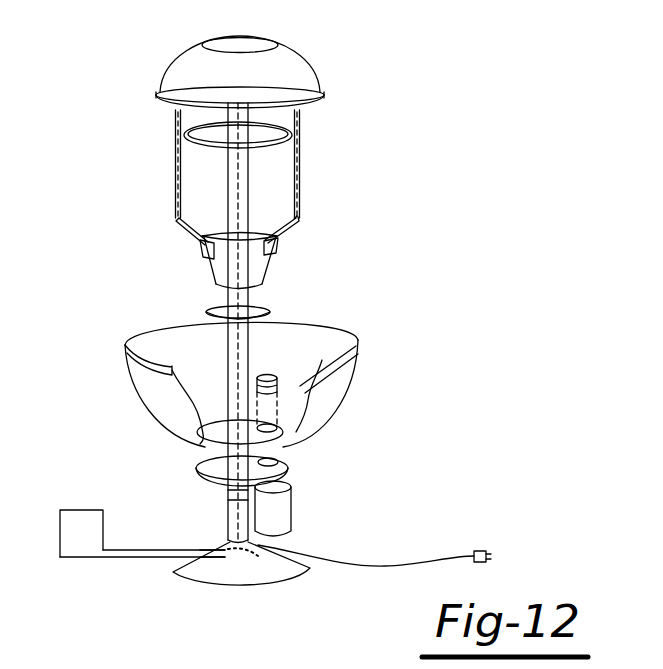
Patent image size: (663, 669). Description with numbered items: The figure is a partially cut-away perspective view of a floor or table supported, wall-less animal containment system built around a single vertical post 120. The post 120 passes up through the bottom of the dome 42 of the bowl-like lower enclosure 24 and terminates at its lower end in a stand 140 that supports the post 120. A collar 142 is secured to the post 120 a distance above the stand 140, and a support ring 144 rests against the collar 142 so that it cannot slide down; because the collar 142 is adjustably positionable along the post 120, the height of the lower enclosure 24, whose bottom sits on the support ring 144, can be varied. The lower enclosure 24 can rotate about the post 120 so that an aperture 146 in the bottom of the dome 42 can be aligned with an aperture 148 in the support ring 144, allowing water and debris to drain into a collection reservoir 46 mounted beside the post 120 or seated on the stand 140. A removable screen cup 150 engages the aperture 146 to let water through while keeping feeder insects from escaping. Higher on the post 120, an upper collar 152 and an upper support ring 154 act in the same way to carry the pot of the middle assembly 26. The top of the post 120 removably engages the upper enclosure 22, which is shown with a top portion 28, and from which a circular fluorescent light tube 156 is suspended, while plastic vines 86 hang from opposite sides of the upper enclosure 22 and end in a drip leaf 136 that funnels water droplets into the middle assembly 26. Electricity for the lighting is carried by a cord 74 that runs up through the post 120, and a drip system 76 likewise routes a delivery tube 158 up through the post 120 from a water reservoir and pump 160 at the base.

The upper enclosure 22 is at (196, 77).
The lower enclosure 24 is at (135, 421).
The middle assembly 26 is at (196, 289).
The top cap of dome 28 is at (200, 62).
The dome 42 is at (276, 250).
The collection reservoir 46 is at (293, 507).
The cord 74 is at (416, 566).
The drip system 76 is at (148, 571).
The plastic vines 86 is at (178, 175).
The post 120 is at (238, 182).
The drip leaf 136 is at (200, 243).
The stand 140 is at (290, 577).
The collar 142 is at (230, 498).
The support ring 144 is at (198, 473).
The aperture 146 is at (333, 407).
The aperture 148 is at (290, 465).
The screen cup 150 is at (354, 347).
The upper collar 152 is at (128, 351).
The upper support ring 154 is at (270, 311).
The circular fluorescent light tube 156 is at (302, 137).
The delivery tube 158 is at (168, 562).
The water reservoir/water pump 160 is at (83, 540).